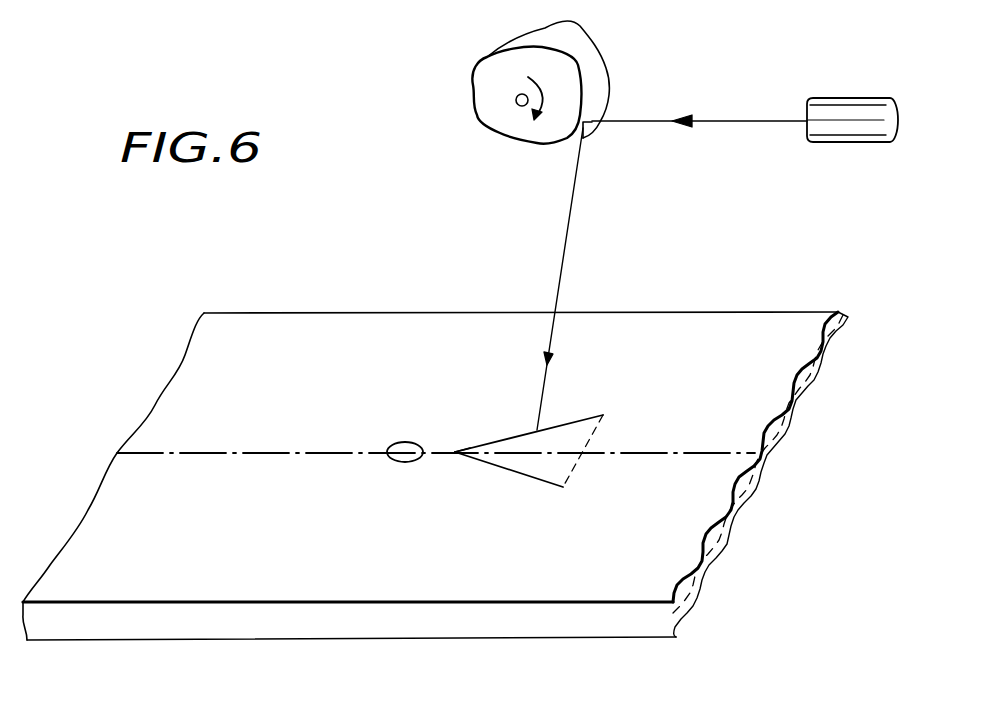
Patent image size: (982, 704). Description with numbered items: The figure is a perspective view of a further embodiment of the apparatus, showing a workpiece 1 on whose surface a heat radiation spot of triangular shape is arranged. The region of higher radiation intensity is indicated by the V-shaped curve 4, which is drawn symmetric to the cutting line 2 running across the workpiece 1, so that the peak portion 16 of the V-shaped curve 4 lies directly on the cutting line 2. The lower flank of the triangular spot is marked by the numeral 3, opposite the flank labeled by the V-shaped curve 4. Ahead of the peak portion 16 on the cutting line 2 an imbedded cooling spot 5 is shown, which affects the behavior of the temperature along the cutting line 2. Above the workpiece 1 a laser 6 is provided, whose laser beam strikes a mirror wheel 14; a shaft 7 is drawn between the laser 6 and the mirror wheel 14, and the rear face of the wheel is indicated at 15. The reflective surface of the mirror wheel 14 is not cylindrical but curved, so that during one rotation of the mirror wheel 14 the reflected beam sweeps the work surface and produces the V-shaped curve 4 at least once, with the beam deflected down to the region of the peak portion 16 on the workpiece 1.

The workpiece 1 is at (241, 313).
The cutting line 2 is at (653, 447).
The lower cone edge 3 is at (510, 463).
The V-shaped curve 4 is at (521, 433).
The cooling spot 5 is at (397, 445).
The laser 6 is at (838, 112).
The drive shaft 7 is at (750, 120).
The mirror wheel 14 is at (482, 88).
The rotating element rear face 15 is at (580, 63).
The peak portion 16 is at (455, 452).